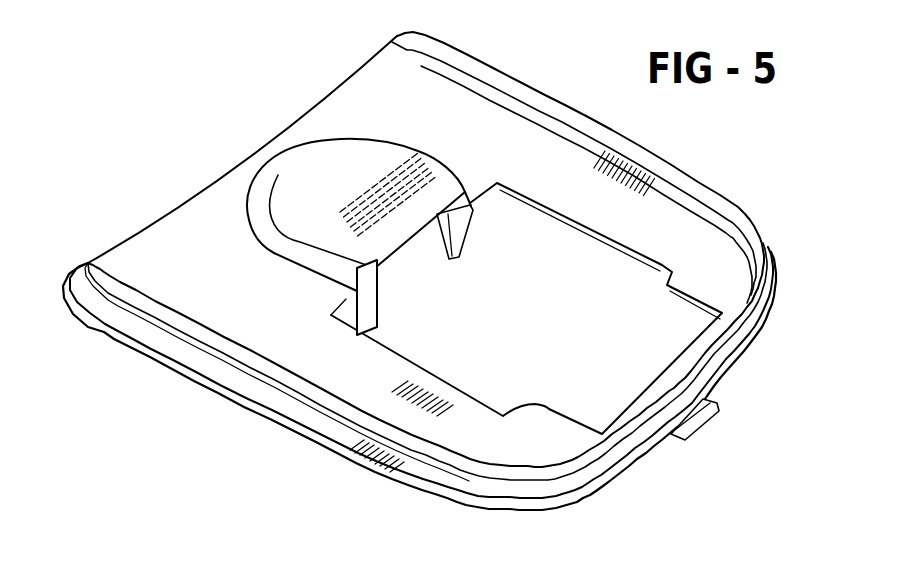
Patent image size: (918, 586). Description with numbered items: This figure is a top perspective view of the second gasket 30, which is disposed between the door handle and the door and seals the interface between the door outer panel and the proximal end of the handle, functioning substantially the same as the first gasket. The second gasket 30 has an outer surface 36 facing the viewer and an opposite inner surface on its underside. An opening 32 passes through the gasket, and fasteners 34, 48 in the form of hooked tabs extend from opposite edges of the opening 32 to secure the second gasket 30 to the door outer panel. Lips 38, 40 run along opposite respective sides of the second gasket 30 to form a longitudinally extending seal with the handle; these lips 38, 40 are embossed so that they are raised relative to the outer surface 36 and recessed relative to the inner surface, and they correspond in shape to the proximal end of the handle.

The second gasket 30 is at (103, 143).
The opening 32 is at (622, 290).
The fastener 34 is at (697, 434).
The outer surface 36 is at (203, 235).
The lip 38 is at (433, 452).
The lip 40 is at (578, 137).
The fastener 48 is at (373, 311).